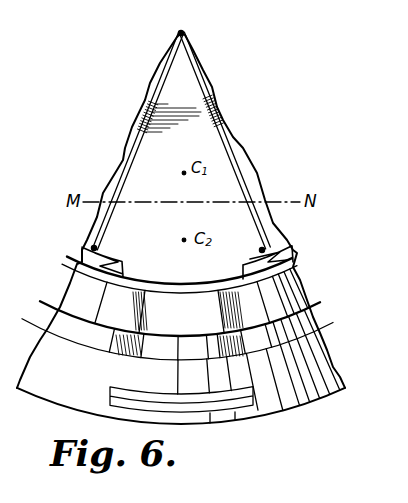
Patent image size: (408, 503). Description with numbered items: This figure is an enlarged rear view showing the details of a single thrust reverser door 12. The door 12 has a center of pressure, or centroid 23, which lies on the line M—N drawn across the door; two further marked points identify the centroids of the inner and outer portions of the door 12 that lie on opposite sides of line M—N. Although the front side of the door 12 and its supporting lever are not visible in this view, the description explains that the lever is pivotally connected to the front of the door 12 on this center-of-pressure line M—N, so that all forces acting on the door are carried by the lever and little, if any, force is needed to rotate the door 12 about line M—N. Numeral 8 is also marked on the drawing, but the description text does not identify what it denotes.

The strut 8 is at (175, 97).
The thrust reverser door 12 is at (166, 240).
The center of pressure or centroid 23 is at (281, 202).